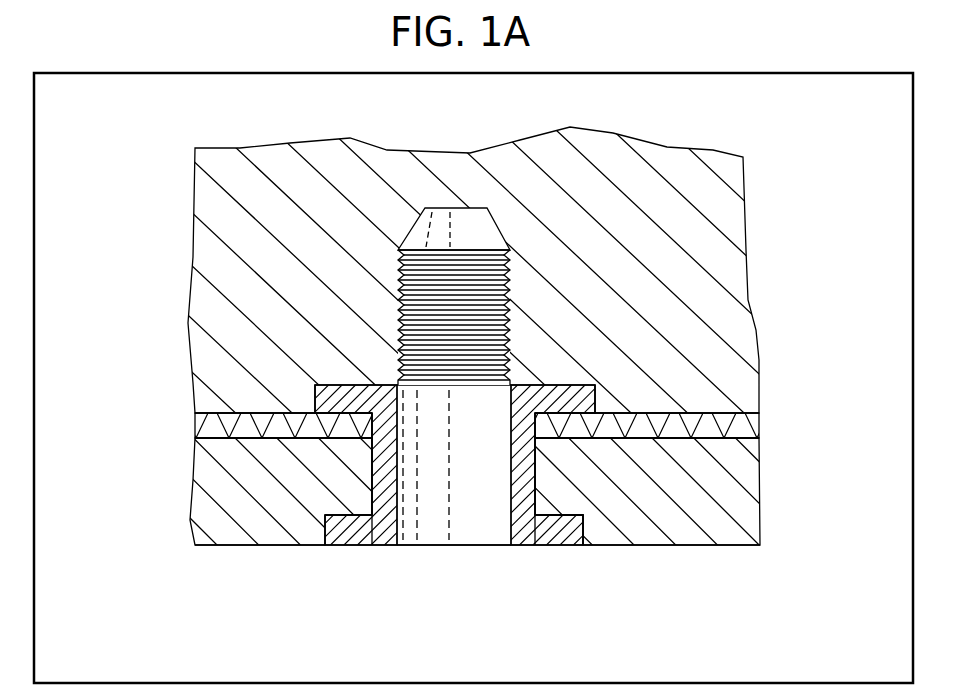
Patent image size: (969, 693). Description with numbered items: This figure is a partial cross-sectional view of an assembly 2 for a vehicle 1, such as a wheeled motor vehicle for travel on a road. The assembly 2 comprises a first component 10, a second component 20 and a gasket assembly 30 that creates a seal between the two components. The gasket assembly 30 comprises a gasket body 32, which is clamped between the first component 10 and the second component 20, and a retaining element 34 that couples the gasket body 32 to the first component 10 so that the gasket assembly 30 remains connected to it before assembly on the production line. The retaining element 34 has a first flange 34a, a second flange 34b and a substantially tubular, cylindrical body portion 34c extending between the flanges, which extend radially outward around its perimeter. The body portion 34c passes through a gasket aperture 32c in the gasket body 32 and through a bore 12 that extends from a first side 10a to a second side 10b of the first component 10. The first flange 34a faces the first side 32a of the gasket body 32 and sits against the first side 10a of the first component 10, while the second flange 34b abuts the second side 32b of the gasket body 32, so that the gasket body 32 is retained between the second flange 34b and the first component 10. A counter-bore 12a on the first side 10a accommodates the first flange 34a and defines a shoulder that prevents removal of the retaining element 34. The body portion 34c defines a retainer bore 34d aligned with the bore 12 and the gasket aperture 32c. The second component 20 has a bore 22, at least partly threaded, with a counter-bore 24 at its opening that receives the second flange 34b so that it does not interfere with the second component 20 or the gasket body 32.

The vehicle 1 is at (183, 66).
The assembly 2 is at (745, 125).
The first component 10 is at (481, 481).
The first side of the first component 10a is at (707, 547).
The second side of the first component 10b is at (637, 437).
The bore 12 is at (537, 473).
The counter-bore 12a is at (585, 533).
The second component 20 is at (647, 252).
The bore 22 is at (367, 233).
The counter-bore 24 is at (375, 383).
The gasket assembly 30 is at (718, 425).
The gasket body 32 is at (483, 415).
The first side of the gasket body 32a is at (728, 440).
The second side of the gasket body 32b is at (690, 412).
The gasket aperture 32c is at (385, 422).
The retaining element 34 is at (485, 447).
The first flange 34a is at (362, 535).
The second flange 34b is at (337, 382).
The body portion 34c is at (393, 465).
The retainer bore 34d is at (467, 530).